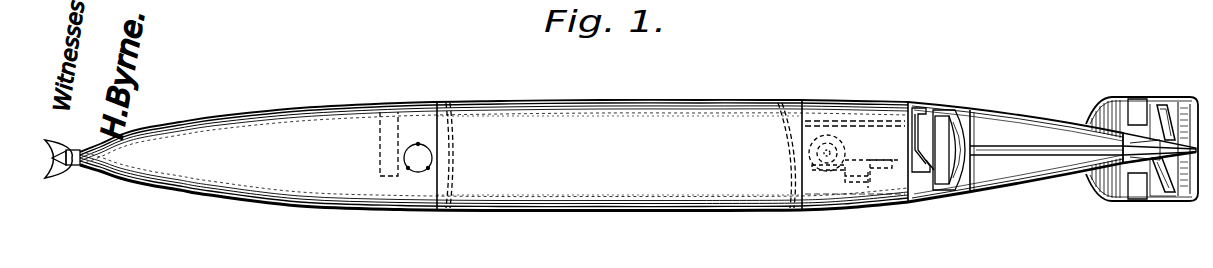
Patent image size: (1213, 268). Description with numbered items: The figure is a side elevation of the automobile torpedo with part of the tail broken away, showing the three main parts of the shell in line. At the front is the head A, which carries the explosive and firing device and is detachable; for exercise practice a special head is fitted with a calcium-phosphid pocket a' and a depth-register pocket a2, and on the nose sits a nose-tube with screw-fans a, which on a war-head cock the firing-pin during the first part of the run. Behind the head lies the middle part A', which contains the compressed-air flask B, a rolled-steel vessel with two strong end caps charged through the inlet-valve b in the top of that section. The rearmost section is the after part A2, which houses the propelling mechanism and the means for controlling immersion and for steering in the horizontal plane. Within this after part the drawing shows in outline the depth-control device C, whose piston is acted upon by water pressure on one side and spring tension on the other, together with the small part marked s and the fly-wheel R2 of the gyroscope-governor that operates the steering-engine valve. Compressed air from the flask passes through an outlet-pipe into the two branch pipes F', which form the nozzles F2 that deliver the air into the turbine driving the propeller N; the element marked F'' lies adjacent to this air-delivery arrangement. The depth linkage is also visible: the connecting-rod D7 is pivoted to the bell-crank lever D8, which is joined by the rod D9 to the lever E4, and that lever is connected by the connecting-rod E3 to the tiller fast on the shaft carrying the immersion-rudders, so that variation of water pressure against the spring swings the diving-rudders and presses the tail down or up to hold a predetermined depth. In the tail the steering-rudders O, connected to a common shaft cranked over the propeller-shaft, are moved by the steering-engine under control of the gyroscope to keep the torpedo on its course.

The screw-fans a is at (71, 147).
The head A is at (494, 137).
The calcium-phosphid pocket a' is at (406, 124).
The depth-register pocket a2 is at (432, 153).
The middle part A' is at (618, 155).
The inlet-valve b is at (632, 102).
The compressed-air flask B is at (776, 104).
The after part A2 is at (838, 112).
The controlling mechanism C is at (854, 157).
The spindle s is at (828, 153).
The fly-wheel R2 is at (862, 190).
The branch pipes F' is at (910, 124).
The cylinder F'' is at (948, 133).
The nozzles F2 is at (933, 186).
The connecting-rod D7 is at (1016, 160).
The bell-crank lever D8 is at (1136, 159).
The rod D9 is at (1155, 198).
The steering-rudders O is at (1134, 100).
The propeller N is at (1166, 104).
The connecting-rod E3 is at (1179, 198).
The lever E4 is at (1166, 200).